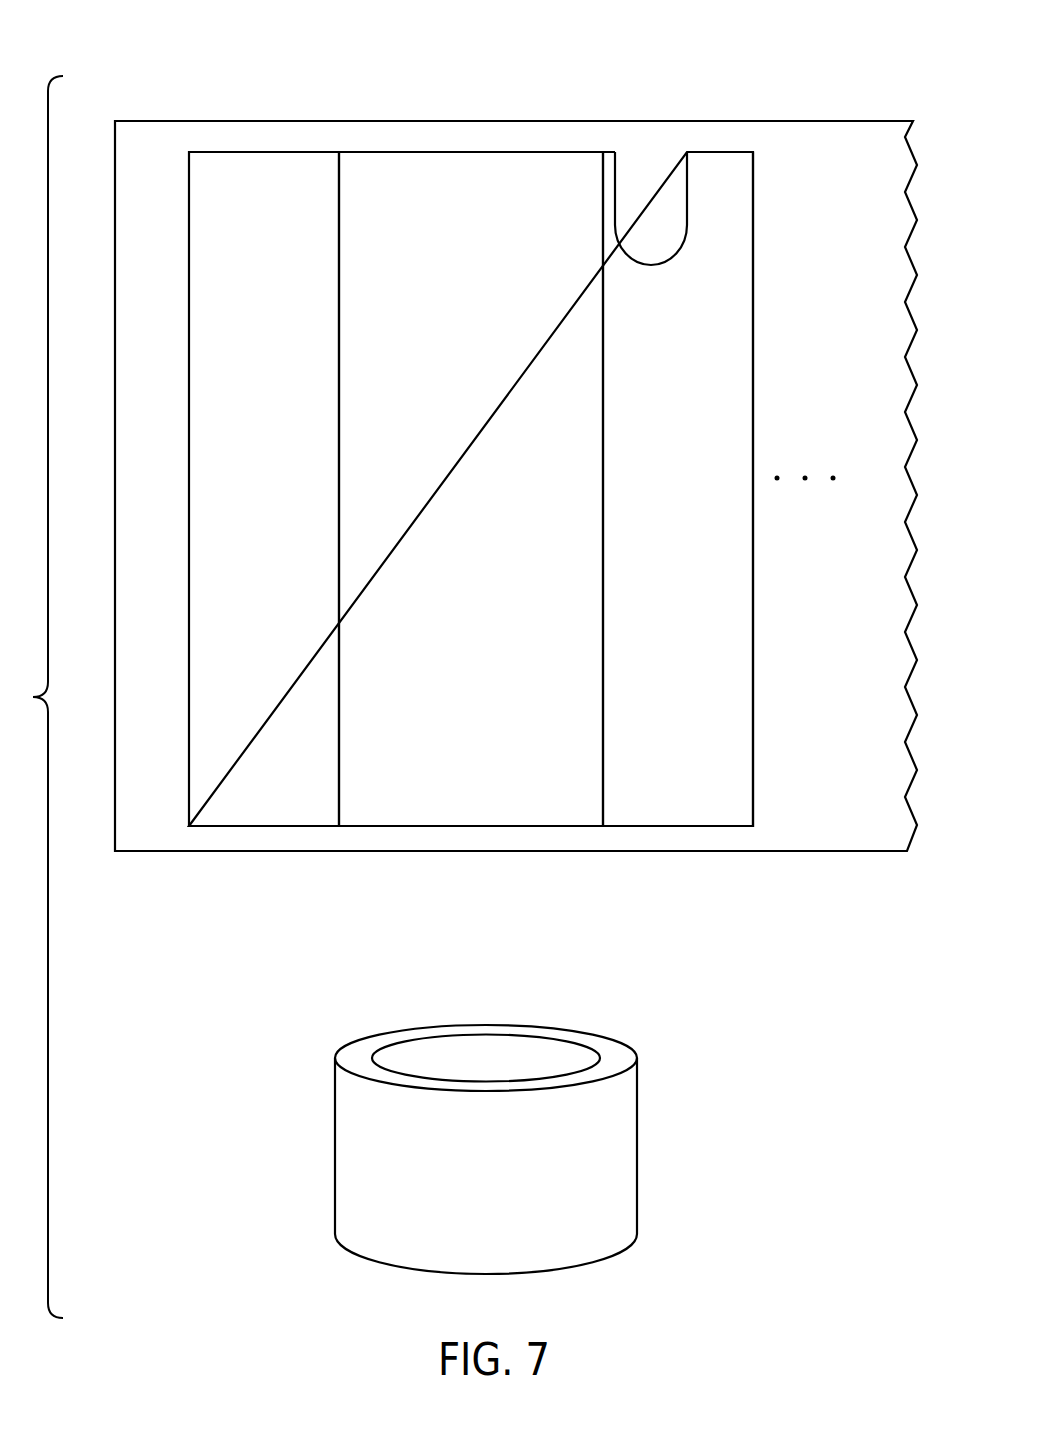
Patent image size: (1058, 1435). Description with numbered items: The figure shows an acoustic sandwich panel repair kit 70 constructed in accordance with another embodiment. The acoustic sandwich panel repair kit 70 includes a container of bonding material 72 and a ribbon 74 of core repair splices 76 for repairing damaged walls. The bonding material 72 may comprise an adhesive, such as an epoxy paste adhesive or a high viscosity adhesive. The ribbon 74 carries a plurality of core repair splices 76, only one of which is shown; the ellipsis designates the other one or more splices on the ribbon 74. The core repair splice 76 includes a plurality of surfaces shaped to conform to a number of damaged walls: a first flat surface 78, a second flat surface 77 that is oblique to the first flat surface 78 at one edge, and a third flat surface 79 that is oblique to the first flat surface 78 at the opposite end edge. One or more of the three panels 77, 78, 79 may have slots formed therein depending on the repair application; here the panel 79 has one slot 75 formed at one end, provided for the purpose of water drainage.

The acoustic sandwich panel repair kit 70 is at (575, 100).
The bonding material 72 is at (627, 1147).
The ribbon 74 is at (765, 119).
The slot 75 is at (618, 227).
The core repair splice 76 is at (535, 818).
The second flat surface 77 is at (273, 766).
The first flat surface 78 is at (485, 766).
The third flat surface 79 is at (697, 766).